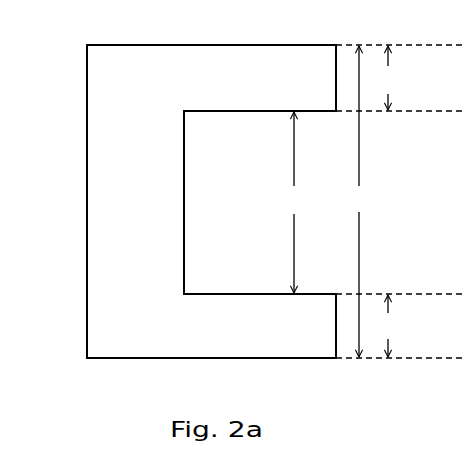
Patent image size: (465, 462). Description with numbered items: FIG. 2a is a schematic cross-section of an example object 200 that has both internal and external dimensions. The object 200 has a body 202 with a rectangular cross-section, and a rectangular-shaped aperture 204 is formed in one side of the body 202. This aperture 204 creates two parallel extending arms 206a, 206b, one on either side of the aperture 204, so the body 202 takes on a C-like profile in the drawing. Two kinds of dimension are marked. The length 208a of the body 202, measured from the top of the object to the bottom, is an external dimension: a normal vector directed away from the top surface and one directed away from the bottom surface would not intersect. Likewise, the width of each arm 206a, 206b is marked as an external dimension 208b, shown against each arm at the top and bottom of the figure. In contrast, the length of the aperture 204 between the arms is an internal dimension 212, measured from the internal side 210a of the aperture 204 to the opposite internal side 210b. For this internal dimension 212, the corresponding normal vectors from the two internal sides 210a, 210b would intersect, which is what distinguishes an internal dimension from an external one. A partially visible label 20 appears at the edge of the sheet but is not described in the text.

The object 200 is at (65, 60).
The body 202 is at (115, 88).
The aperture 204 is at (327, 182).
The arm 206a is at (295, 78).
The arm 206b is at (297, 326).
The length of the body 208a is at (362, 201).
The external dimension 208b is at (393, 201).
The internal side 210a is at (208, 112).
The internal side 210b is at (219, 294).
The internal dimension 212 is at (293, 202).
The partial numeral 20 is at (464, 41).